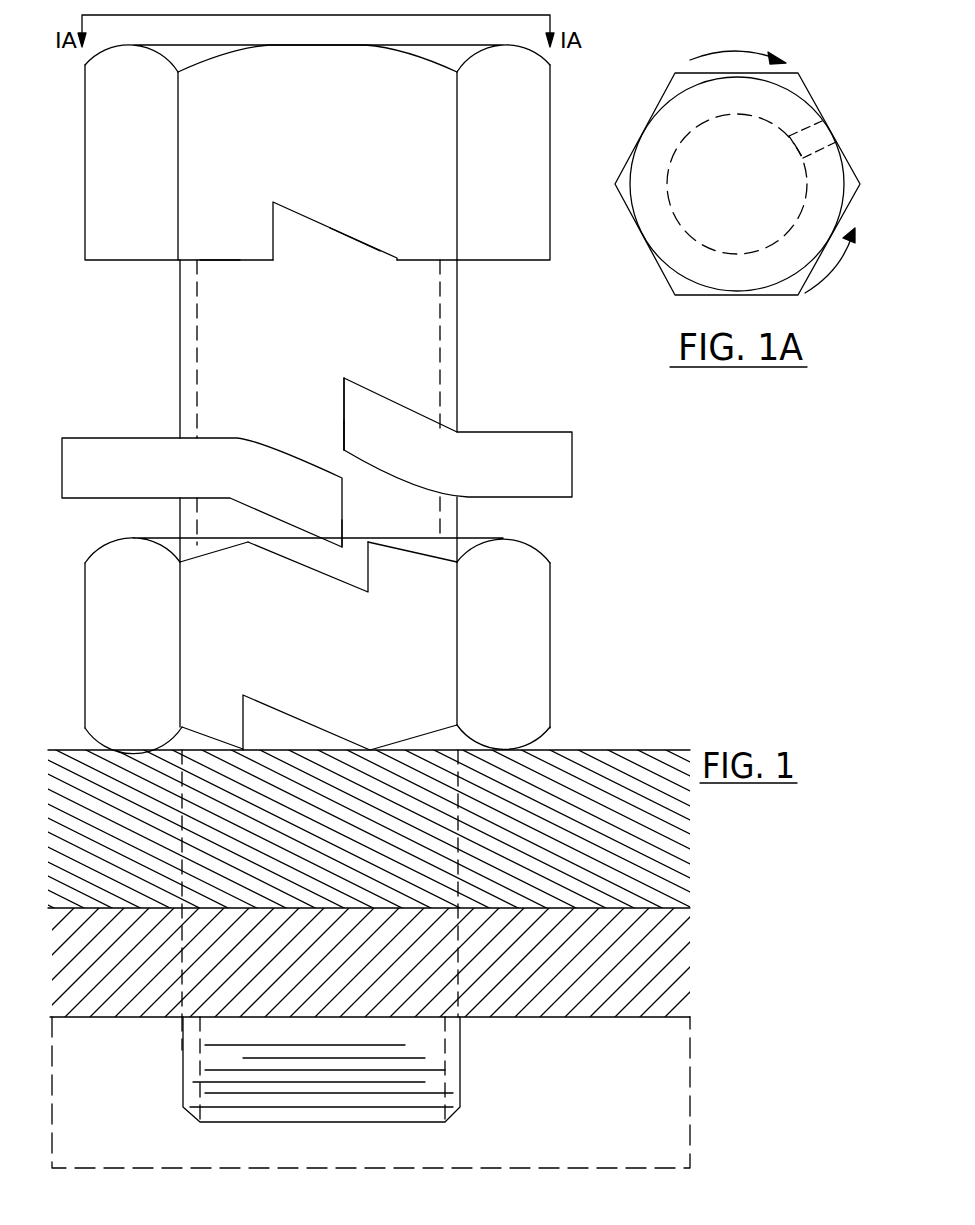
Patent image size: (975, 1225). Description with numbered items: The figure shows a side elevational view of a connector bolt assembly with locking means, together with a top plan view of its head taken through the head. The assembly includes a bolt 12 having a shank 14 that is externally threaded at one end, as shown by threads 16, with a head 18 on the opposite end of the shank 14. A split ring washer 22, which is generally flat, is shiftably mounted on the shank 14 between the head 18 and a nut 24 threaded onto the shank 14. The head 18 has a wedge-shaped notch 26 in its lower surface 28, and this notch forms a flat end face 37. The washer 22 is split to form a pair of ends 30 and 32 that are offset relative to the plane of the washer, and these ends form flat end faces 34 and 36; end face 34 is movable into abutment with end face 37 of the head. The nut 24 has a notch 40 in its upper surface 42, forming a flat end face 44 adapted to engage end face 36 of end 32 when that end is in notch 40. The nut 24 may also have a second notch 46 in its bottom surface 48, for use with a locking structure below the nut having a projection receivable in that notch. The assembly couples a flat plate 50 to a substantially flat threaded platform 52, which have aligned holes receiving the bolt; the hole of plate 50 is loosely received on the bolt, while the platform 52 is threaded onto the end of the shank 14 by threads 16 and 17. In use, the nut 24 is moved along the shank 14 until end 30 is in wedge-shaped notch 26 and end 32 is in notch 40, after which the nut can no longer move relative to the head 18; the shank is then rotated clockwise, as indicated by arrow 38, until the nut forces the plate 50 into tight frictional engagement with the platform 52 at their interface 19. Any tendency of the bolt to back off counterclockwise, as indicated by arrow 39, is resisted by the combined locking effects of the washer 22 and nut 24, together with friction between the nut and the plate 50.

In FIG. 1, the bolt 12 is at (457, 393).
In FIG. 1A, the bolt 12 is at (808, 88).
In FIG. 1, the shank 14 is at (430, 360).
In FIG. 1, the threads 16 is at (417, 1068).
In FIG. 1, the threads 17 is at (182, 986).
In FIG. 1, the head 18 is at (533, 142).
In FIG. 1A, the head 18 is at (662, 247).
In FIG. 1, the interface 19 is at (690, 907).
In FIG. 1, the split ring washer 22 is at (503, 428).
In FIG. 1, the nut 24 is at (548, 660).
In FIG. 1, the wedge-shaped notch 26 is at (381, 251).
In FIG. 1A, the wedge-shaped notch 26 is at (817, 133).
In FIG. 1, the lower surface 28 is at (217, 260).
In FIG. 1, the end 30 is at (343, 397).
In FIG. 1, the end 32 is at (345, 513).
In FIG. 1, the flat end face 34 is at (342, 433).
In FIG. 1, the flat end face 36 is at (357, 543).
In FIG. 1, the flat end face 37 is at (275, 247).
In FIG. 1A, the arrow 38 is at (813, 50).
In FIG. 1A, the arrow 39 is at (822, 287).
In FIG. 1, the notch 40 is at (293, 565).
In FIG. 1, the upper surface 42 is at (178, 565).
In FIG. 1, the flat end face 44 is at (370, 575).
In FIG. 1, the second notch 46 is at (298, 720).
In FIG. 1, the bottom surface 48 is at (175, 745).
In FIG. 1, the flat plate 50 is at (555, 745).
In FIG. 1, the threaded platform 52 is at (663, 1018).